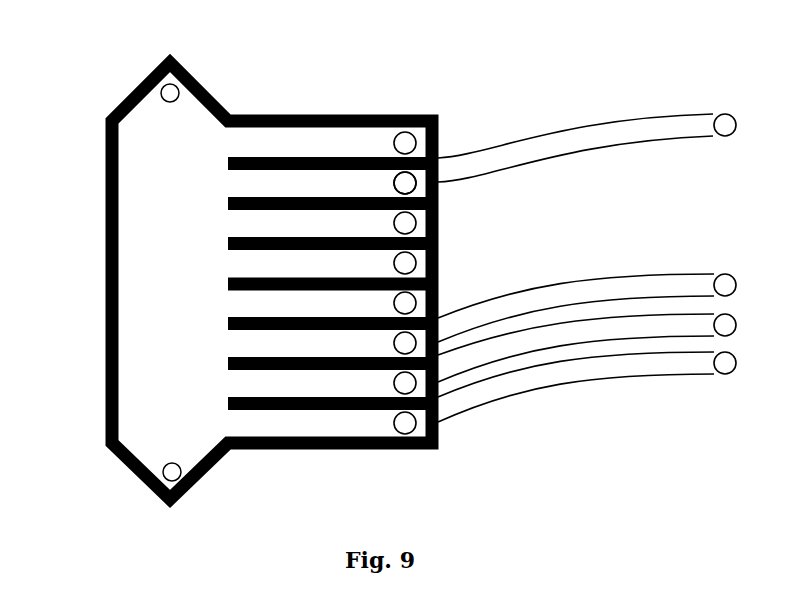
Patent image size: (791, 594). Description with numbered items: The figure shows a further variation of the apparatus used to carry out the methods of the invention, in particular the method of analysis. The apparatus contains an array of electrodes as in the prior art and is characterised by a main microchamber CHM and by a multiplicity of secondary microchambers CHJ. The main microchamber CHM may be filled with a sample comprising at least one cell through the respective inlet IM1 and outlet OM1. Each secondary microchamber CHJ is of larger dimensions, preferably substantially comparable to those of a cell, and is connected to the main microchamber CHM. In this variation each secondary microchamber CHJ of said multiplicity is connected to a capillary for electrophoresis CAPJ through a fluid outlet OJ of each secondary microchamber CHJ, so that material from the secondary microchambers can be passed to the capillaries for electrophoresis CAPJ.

The inlet IM1 is at (148, 75).
The outlet OM1 is at (163, 497).
The main microchamber CHM is at (172, 188).
The secondary microchamber CHJ is at (330, 182).
The capillary for electrophoresis CAPJ is at (673, 122).
The fluid outlet OJ is at (418, 183).